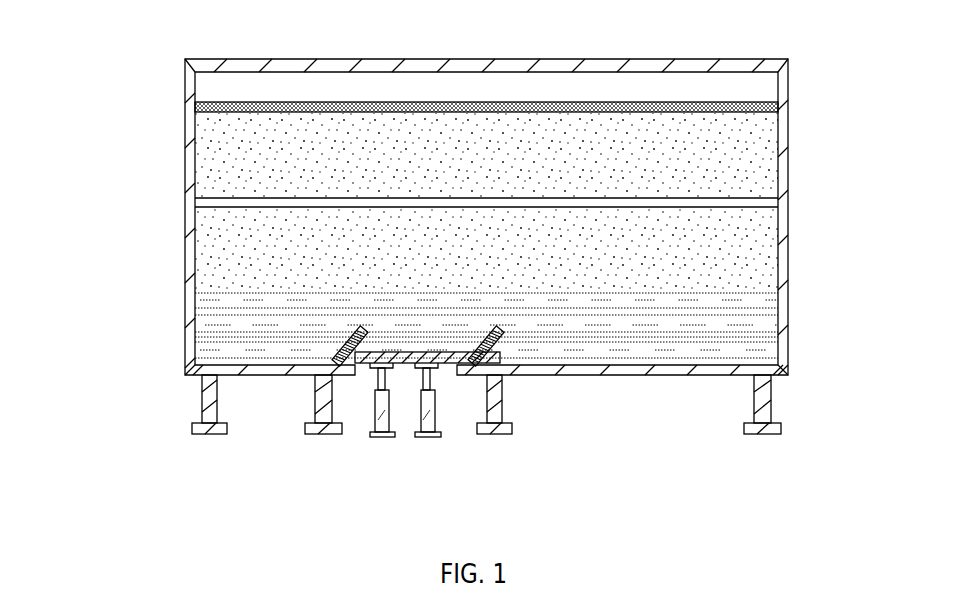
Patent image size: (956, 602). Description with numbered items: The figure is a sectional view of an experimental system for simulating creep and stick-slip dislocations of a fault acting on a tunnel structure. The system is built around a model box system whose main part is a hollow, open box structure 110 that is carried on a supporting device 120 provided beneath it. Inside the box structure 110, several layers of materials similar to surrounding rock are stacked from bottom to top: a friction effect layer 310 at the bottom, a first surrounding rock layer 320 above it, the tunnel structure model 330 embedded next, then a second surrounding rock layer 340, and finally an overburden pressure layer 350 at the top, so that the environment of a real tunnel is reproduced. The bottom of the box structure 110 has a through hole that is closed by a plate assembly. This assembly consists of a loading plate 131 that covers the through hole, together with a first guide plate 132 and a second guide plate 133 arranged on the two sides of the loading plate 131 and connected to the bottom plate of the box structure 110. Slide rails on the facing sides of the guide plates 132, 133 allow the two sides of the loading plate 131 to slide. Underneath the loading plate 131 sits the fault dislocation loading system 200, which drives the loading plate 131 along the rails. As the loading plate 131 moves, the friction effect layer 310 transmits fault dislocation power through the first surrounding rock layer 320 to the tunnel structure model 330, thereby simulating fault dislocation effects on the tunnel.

The box structure 110 is at (185, 210).
The supporting device 120 is at (206, 404).
The loading plate 131 is at (400, 360).
The first guide plate 132 is at (338, 349).
The second guide plate 133 is at (494, 369).
The fault dislocation loading system 200 is at (378, 410).
The friction effect layer 310 is at (698, 348).
The first surrounding rock layer 320 is at (718, 275).
The tunnel structure model 330 is at (694, 204).
The second surrounding rock layer 340 is at (682, 158).
The overburden pressure layer 350 is at (222, 106).